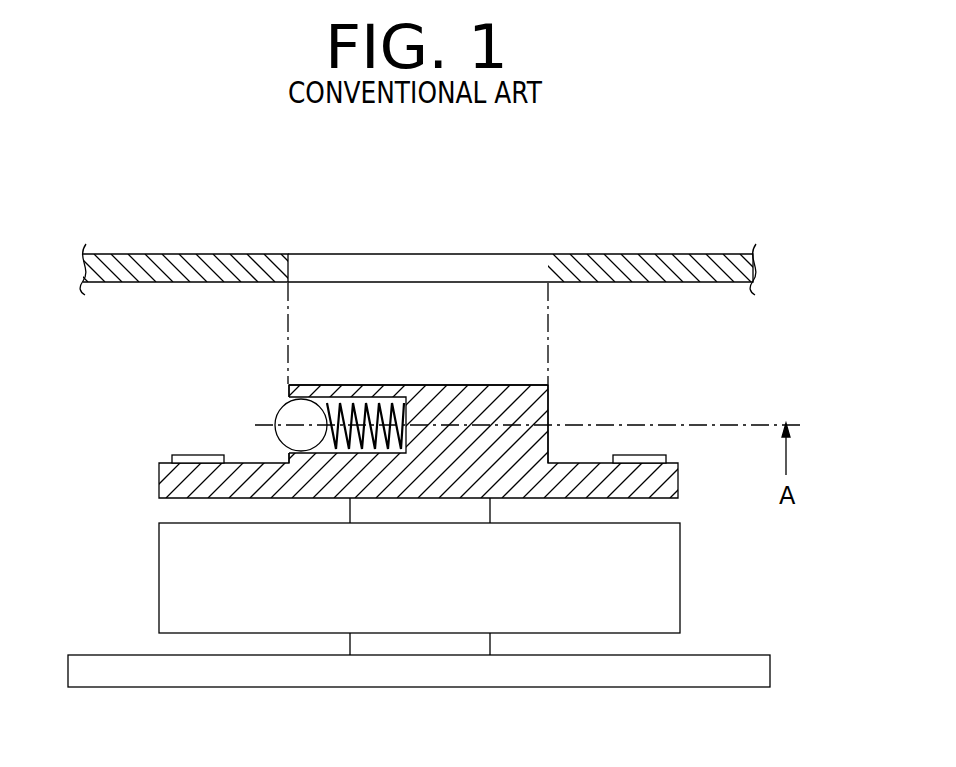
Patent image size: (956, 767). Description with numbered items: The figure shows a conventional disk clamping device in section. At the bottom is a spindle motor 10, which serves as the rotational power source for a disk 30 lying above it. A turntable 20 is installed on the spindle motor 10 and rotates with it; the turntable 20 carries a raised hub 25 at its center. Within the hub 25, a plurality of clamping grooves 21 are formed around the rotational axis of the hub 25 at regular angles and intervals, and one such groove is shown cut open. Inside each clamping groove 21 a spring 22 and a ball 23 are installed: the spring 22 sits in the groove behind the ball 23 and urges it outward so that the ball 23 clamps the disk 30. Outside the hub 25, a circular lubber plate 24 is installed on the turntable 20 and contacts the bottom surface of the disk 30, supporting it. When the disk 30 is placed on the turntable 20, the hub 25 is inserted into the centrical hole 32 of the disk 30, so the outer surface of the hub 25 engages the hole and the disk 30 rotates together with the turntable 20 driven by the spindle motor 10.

The spindle motor 10 is at (178, 595).
The turntable 20 is at (170, 485).
The clamping grooves 21 is at (382, 397).
The springs 22 is at (357, 397).
The balls 23 is at (287, 415).
The circular lubber plate 24 is at (195, 457).
The hub 25 is at (540, 405).
The disk 30 is at (207, 262).
The centrical hole 32 is at (340, 258).